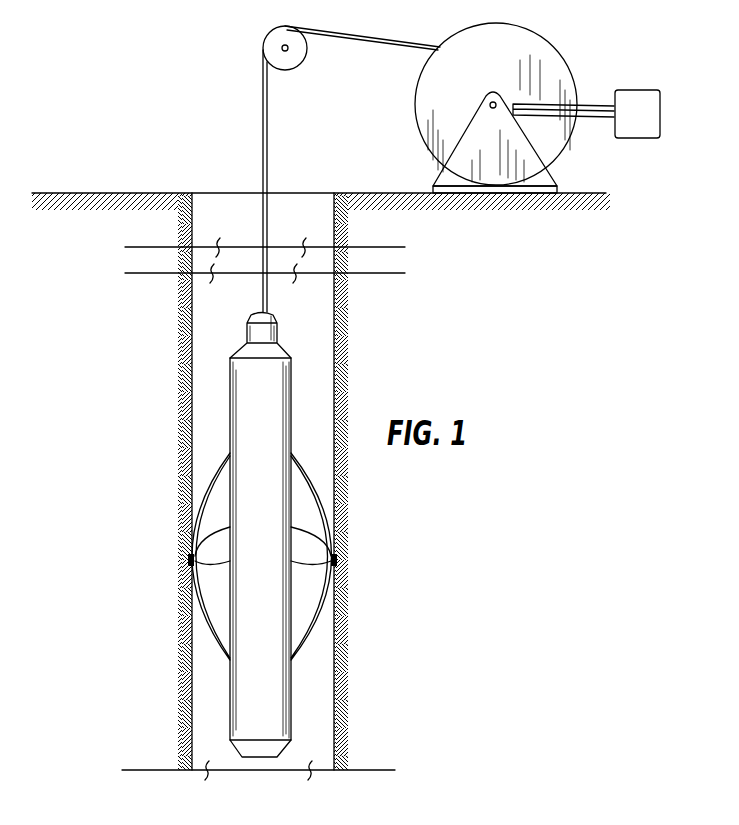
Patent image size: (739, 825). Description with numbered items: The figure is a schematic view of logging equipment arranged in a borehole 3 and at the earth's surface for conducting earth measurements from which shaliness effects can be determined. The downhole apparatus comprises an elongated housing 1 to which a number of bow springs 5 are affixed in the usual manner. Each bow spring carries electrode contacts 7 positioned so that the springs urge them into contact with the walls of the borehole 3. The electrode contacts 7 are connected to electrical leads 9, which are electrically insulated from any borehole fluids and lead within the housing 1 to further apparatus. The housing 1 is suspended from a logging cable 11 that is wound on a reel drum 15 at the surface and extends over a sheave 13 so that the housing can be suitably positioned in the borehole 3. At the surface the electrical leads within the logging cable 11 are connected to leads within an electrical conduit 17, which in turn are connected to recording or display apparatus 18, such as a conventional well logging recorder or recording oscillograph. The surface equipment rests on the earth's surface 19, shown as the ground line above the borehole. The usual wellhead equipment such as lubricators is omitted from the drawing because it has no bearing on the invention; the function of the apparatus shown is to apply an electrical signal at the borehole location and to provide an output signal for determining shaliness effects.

The elongated housing 1 is at (230, 402).
The borehole 3 is at (335, 392).
The bow springs 5 is at (212, 477).
The electrode contacts 7 is at (188, 560).
The electrical leads 9 is at (205, 537).
The logging cable 11 is at (262, 160).
The sheave 13 is at (306, 51).
The reel drum 15 is at (416, 86).
The electrical conduit 17 is at (593, 104).
The recording or display apparatus 18 is at (663, 113).
The earth surface 19 is at (586, 198).